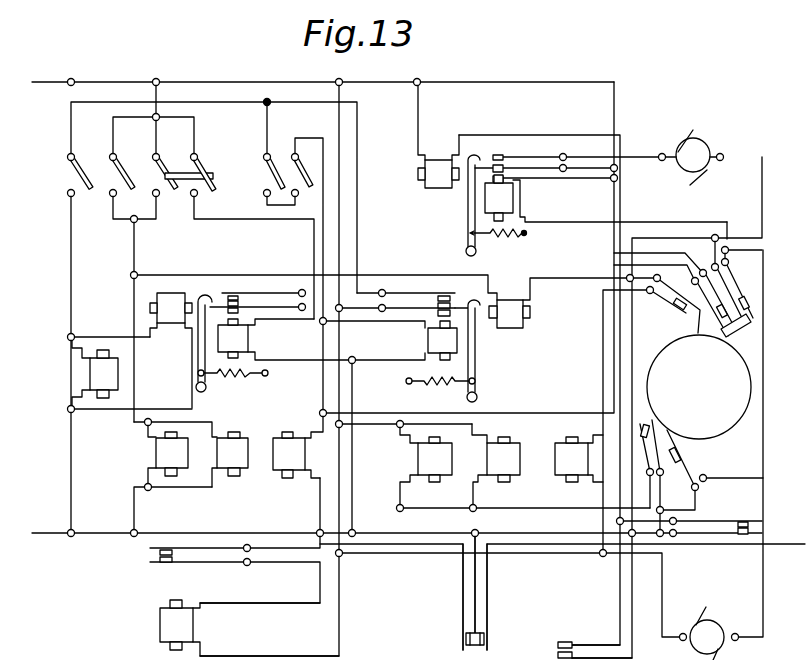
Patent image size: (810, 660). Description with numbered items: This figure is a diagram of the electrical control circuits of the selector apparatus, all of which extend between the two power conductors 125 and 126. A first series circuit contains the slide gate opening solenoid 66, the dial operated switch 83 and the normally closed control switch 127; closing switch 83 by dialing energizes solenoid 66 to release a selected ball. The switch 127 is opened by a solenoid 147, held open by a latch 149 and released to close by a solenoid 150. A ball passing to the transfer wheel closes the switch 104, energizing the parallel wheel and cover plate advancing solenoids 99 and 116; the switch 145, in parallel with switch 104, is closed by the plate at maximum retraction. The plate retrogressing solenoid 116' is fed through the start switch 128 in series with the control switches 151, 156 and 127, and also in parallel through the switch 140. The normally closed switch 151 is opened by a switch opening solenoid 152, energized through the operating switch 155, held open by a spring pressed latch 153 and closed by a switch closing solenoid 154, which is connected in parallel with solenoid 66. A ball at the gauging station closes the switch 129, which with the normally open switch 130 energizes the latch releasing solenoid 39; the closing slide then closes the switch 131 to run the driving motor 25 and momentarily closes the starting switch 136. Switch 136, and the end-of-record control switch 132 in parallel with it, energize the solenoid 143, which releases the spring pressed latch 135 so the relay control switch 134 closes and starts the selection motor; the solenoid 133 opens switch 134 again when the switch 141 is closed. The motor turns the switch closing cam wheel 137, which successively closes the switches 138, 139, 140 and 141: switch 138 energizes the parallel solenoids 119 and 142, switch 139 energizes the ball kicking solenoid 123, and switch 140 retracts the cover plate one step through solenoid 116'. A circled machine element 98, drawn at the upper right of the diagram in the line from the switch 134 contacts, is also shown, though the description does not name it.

The power conductor 125 is at (62, 97).
The power conductor 126 is at (351, 523).
The dial operated switch 83 is at (80, 156).
The switch 104 is at (119, 157).
The switch 145 is at (162, 157).
The operating switch 155 is at (200, 160).
The switch 156 is at (272, 174).
The start switch 128 is at (310, 133).
The solenoid 143 is at (436, 158).
The relay control switch 134 is at (508, 156).
The spring pressed latch 135 is at (466, 218).
The solenoid 133 is at (512, 195).
The generator 98 is at (691, 157).
The switch closing solenoid 154 is at (171, 292).
The spring pressed latch 153 is at (207, 292).
The switch 151 is at (258, 292).
The switch opening solenoid 152 is at (248, 338).
The slide gate opening solenoid 66 is at (118, 363).
The control switch 127 is at (433, 298).
The solenoid 147 is at (428, 340).
The latch 149 is at (478, 364).
The solenoid 150 is at (527, 322).
The switch means 139 is at (683, 308).
The switch 141 is at (749, 305).
The switch 140 is at (724, 325).
The switch closing cam wheel 137 is at (718, 428).
The switch 138 is at (652, 423).
The wheel advancing solenoid 99 is at (157, 452).
The cover plate advancing solenoid 116 is at (234, 448).
The plate retrogressing solenoid 116' is at (298, 444).
The solenoid 119 is at (426, 466).
The solenoid 142 is at (496, 466).
The ball kicking solenoid 123 is at (579, 458).
The control switch 132 is at (727, 524).
The switch 129 is at (150, 556).
The latch releasing solenoid 39 is at (163, 630).
The switch 130 is at (466, 632).
The switch 131 is at (486, 632).
The starting switch 136 is at (577, 645).
The driving motor 25 is at (709, 633).